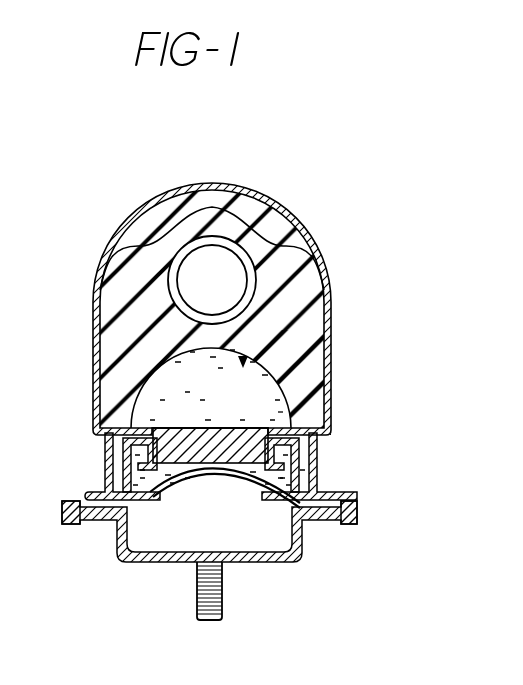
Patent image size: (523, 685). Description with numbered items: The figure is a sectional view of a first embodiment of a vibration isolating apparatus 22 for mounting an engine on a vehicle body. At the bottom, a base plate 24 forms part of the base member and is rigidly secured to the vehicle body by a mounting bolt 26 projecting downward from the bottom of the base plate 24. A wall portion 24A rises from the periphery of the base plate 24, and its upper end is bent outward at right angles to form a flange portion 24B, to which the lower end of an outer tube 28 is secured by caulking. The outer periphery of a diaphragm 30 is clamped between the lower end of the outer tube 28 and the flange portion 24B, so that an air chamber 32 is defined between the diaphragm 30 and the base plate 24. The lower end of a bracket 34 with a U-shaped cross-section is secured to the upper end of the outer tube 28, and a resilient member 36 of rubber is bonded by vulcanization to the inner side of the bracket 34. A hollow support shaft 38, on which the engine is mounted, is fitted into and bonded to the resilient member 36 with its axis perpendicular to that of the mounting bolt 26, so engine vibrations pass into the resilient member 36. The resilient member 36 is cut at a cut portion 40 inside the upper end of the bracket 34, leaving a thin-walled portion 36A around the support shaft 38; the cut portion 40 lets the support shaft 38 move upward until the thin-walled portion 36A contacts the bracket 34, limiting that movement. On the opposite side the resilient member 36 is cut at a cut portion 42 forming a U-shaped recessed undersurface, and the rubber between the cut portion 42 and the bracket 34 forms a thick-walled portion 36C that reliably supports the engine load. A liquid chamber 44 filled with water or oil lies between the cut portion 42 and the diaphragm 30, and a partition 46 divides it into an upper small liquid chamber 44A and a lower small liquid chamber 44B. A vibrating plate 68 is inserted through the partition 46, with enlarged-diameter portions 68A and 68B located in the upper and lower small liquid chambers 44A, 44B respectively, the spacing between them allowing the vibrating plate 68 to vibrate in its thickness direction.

The vibration isolating apparatus 22 is at (334, 198).
The base plate 24 is at (156, 562).
The wall portion 24A is at (302, 531).
The flange portion 24B is at (100, 516).
The mounting bolt 26 is at (223, 591).
The outer tube 28 is at (317, 463).
The diaphragm 30 is at (220, 474).
The air chamber 32 is at (232, 551).
The bracket 34 is at (331, 341).
The resilient member 36 is at (316, 298).
The thin-walled portion 36A is at (198, 212).
The thick-walled portion 36C is at (317, 383).
The support shaft 38 is at (181, 251).
The cut portion 40 is at (253, 196).
The cut portion 42 is at (252, 380).
The liquid chamber 44 is at (243, 360).
The upper small liquid chamber 44A is at (206, 386).
The lower small liquid chamber 44B is at (156, 490).
The partition 46 is at (282, 424).
The vibrating plate 68 is at (227, 431).
The enlarged-diameter portion 68A is at (153, 428).
The enlarged-diameter portion 68B is at (268, 481).